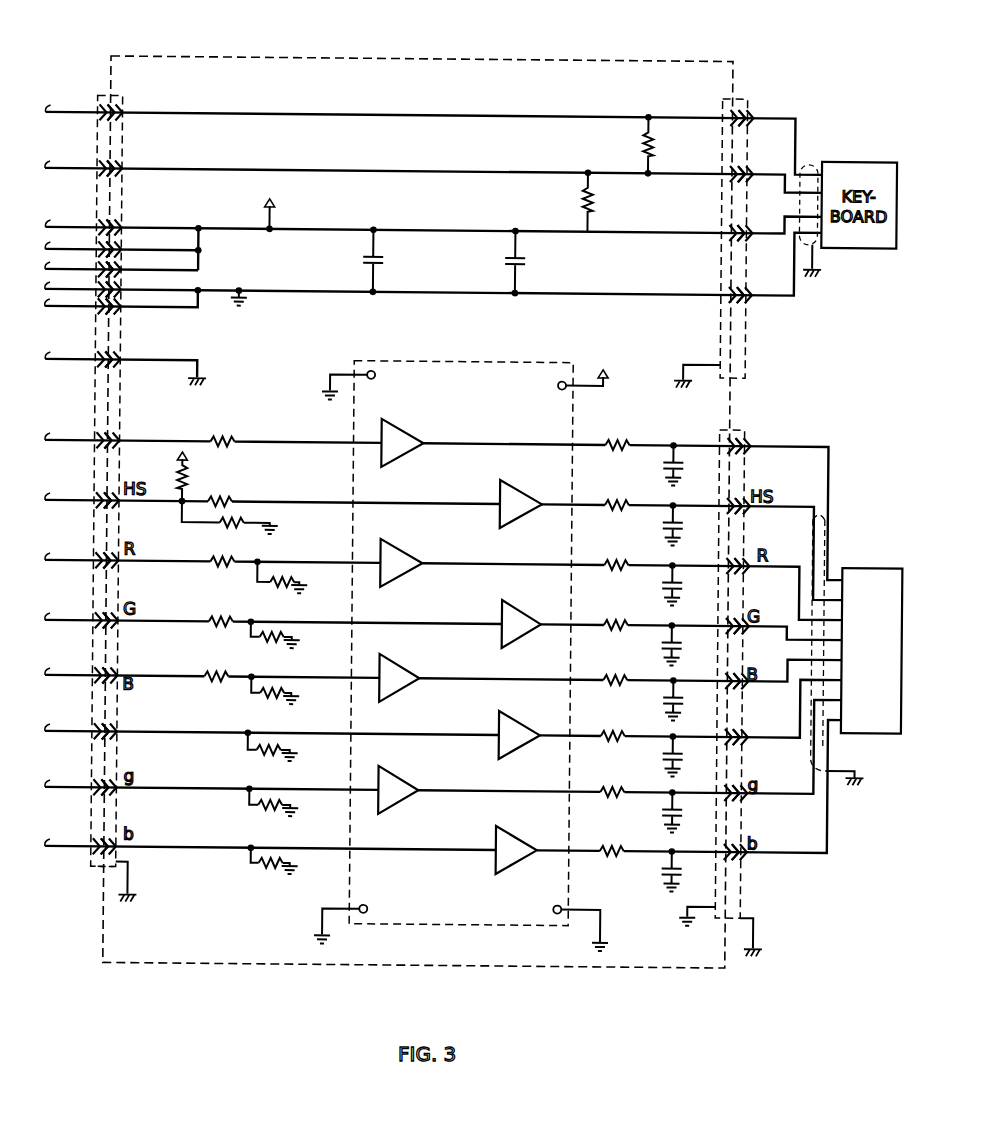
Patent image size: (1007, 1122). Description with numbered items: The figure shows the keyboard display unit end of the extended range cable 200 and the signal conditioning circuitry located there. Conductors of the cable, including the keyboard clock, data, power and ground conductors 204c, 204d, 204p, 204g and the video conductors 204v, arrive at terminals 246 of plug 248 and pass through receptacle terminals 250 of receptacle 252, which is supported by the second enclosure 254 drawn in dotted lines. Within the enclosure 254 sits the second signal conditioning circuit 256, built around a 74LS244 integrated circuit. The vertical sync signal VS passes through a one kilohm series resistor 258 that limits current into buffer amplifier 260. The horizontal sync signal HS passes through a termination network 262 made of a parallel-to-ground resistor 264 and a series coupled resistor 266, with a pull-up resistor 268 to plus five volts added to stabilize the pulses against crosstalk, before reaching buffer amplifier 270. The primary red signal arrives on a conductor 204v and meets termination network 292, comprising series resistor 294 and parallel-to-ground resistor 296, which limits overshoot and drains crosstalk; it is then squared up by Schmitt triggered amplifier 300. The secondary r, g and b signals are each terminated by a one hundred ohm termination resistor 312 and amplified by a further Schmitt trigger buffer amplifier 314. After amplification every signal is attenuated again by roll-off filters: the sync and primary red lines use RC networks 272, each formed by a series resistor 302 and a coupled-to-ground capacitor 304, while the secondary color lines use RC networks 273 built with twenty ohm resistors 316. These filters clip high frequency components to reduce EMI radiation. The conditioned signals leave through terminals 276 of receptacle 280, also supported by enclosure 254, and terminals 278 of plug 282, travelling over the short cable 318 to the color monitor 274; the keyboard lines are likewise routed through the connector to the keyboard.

The extended range cable 200 is at (46, 82).
The conductor 204c is at (434, 132).
The conductor 204d is at (82, 172).
The conductor 204p is at (80, 273).
The conductor 204g is at (74, 311).
The conductor 204v is at (70, 444).
The terminals of plug 246 is at (98, 113).
The plug 248 is at (95, 870).
The receptacle terminals 250 is at (500, 29).
The receptacle 252 is at (124, 863).
The second enclosure 254 is at (235, 57).
The second signal conditioning circuit 256 is at (469, 652).
The series resistor 258 is at (225, 441).
The buffer amplifier 260 is at (402, 434).
The termination network 262 is at (247, 491).
The parallel-to-ground resistor 264 is at (244, 522).
The series coupled resistor 266 is at (232, 498).
The pull-up resistor 268 is at (191, 486).
The buffer amplifier 270 is at (507, 492).
The RC networks 272 is at (632, 620).
The RC networks 273 is at (637, 796).
The color monitor 274 is at (876, 565).
The terminals of receptacle 276 is at (725, 446).
The terminals of plug 278 is at (742, 451).
The receptacle 280 is at (720, 920).
The plug 282 is at (744, 912).
The termination network 292 is at (254, 565).
The series connected resistor 294 is at (214, 568).
The parallel-to-ground resistor 296 is at (288, 584).
The amplifier 300 is at (402, 554).
The series connected resistor 302 is at (619, 564).
The capacitor 304 is at (668, 584).
The termination resistor 312 is at (284, 754).
The Schmitt trigger buffer amplifier 314 is at (506, 721).
The resistor 316 is at (614, 744).
The cable 318 is at (837, 520).